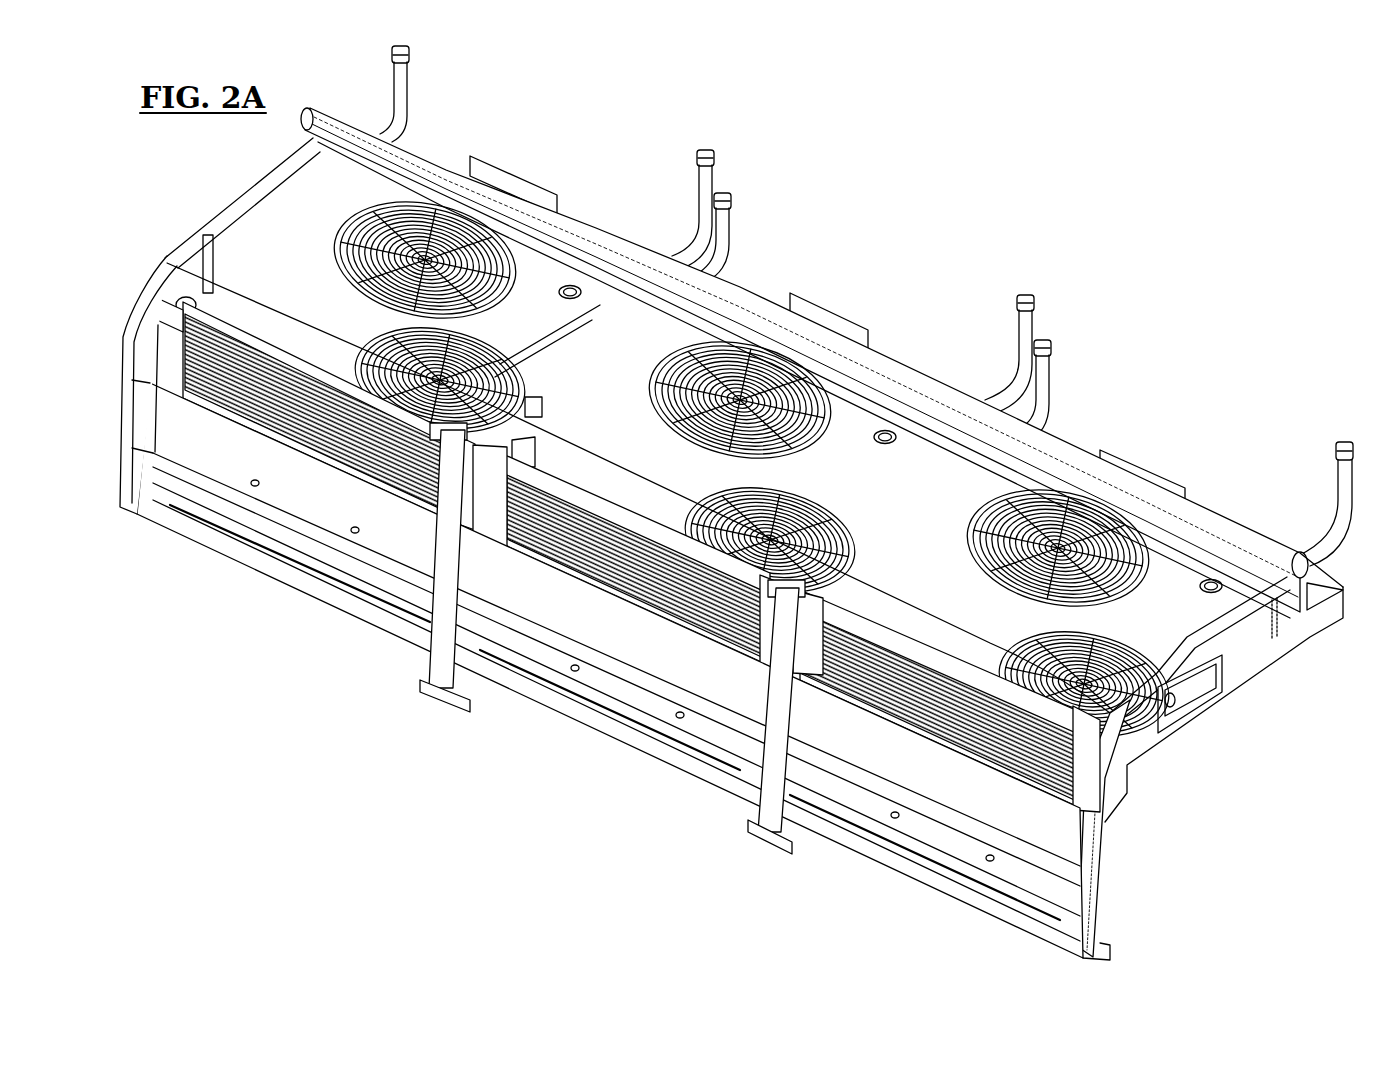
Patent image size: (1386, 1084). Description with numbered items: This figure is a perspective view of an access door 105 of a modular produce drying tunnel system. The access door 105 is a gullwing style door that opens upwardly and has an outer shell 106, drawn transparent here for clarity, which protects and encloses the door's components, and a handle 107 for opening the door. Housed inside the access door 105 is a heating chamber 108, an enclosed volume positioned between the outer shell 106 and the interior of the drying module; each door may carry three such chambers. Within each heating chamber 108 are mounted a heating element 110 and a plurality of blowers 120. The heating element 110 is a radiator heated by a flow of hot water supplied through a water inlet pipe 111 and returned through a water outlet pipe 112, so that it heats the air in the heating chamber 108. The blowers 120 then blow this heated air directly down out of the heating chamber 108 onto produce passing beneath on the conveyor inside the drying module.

The access door 105 is at (1174, 258).
The outer shell 106 is at (137, 440).
The handle 107 is at (483, 717).
The heating chamber 108 is at (620, 407).
The heating element 110 is at (722, 625).
The water inlet pipe 111 is at (727, 262).
The water outlet pipe 112 is at (1012, 372).
The blower 120 is at (820, 433).